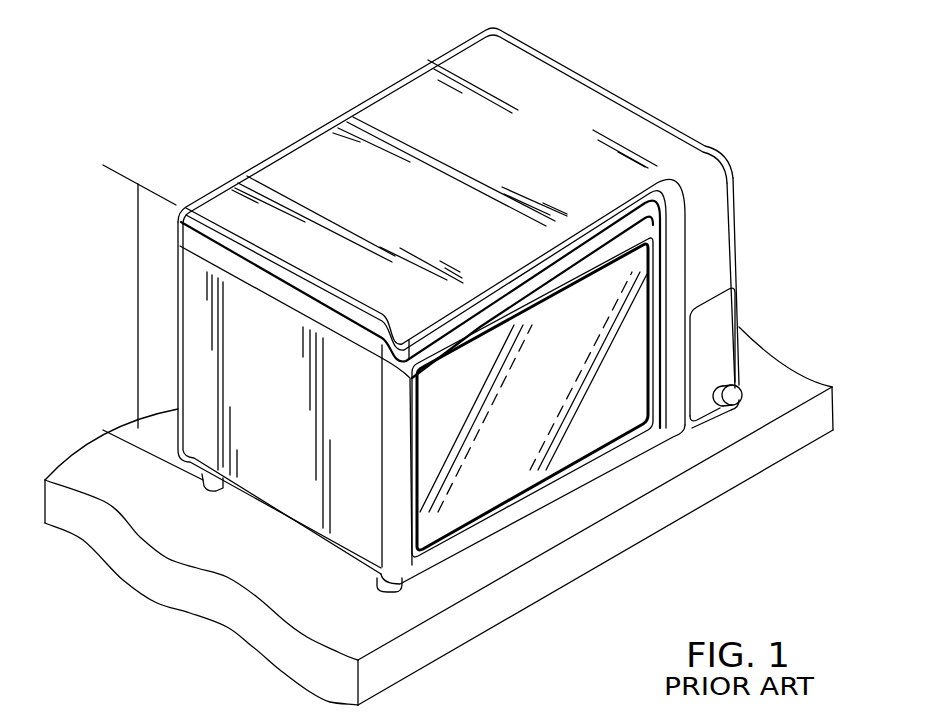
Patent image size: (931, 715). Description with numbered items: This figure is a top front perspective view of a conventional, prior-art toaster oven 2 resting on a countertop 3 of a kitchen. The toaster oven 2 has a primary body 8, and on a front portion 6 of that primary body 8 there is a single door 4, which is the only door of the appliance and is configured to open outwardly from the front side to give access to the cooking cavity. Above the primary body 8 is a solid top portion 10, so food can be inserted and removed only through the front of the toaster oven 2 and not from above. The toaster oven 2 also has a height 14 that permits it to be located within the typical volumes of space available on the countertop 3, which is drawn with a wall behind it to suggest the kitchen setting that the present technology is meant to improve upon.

The conventional toaster oven 2 is at (626, 98).
The countertop 3 is at (82, 447).
The single door 4 is at (592, 300).
The front portion 6 is at (530, 405).
The primary body 8 is at (296, 498).
The solid top portion 10 is at (397, 102).
The height 14 is at (138, 316).